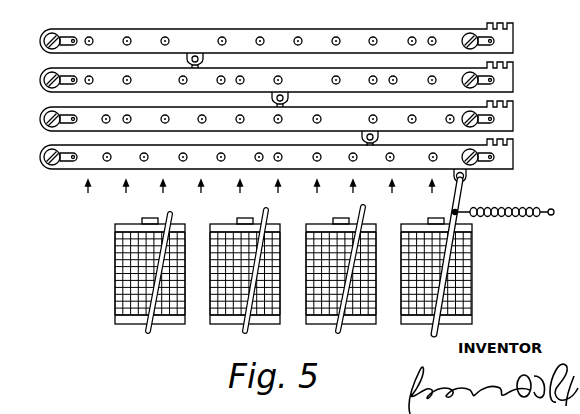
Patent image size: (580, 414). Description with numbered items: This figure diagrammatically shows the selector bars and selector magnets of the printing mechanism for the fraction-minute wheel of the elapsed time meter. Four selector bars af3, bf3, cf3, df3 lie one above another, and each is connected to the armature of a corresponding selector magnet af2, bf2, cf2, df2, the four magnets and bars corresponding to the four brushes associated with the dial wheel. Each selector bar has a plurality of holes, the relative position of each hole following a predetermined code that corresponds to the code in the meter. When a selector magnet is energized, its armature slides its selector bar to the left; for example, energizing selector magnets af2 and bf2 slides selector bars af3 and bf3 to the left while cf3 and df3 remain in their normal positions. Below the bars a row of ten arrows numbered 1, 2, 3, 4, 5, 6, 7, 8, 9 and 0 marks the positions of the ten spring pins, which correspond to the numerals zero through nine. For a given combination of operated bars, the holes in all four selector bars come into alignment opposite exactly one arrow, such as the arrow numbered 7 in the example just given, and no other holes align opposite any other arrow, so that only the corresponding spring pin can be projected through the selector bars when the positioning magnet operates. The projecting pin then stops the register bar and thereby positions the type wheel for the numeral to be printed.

The selector bar af3 is at (513, 34).
The selector bar bf3 is at (513, 73).
The selector bar cf3 is at (513, 112).
The selector bar df3 is at (513, 150).
The selector magnet af2 is at (127, 324).
The selector magnet bf2 is at (221, 324).
The selector magnet cf2 is at (316, 324).
The selector magnet df2 is at (411, 324).
The arrow numbered 1 is at (88, 196).
The arrow numbered 2 is at (126, 196).
The arrow numbered 3 is at (163, 196).
The arrow numbered 4 is at (201, 196).
The arrow numbered 5 is at (240, 196).
The arrow numbered 6 is at (278, 196).
The arrow numbered 7 is at (317, 196).
The arrow numbered 8 is at (353, 196).
The arrow numbered 9 is at (392, 196).
The arrow numbered 0 is at (432, 196).